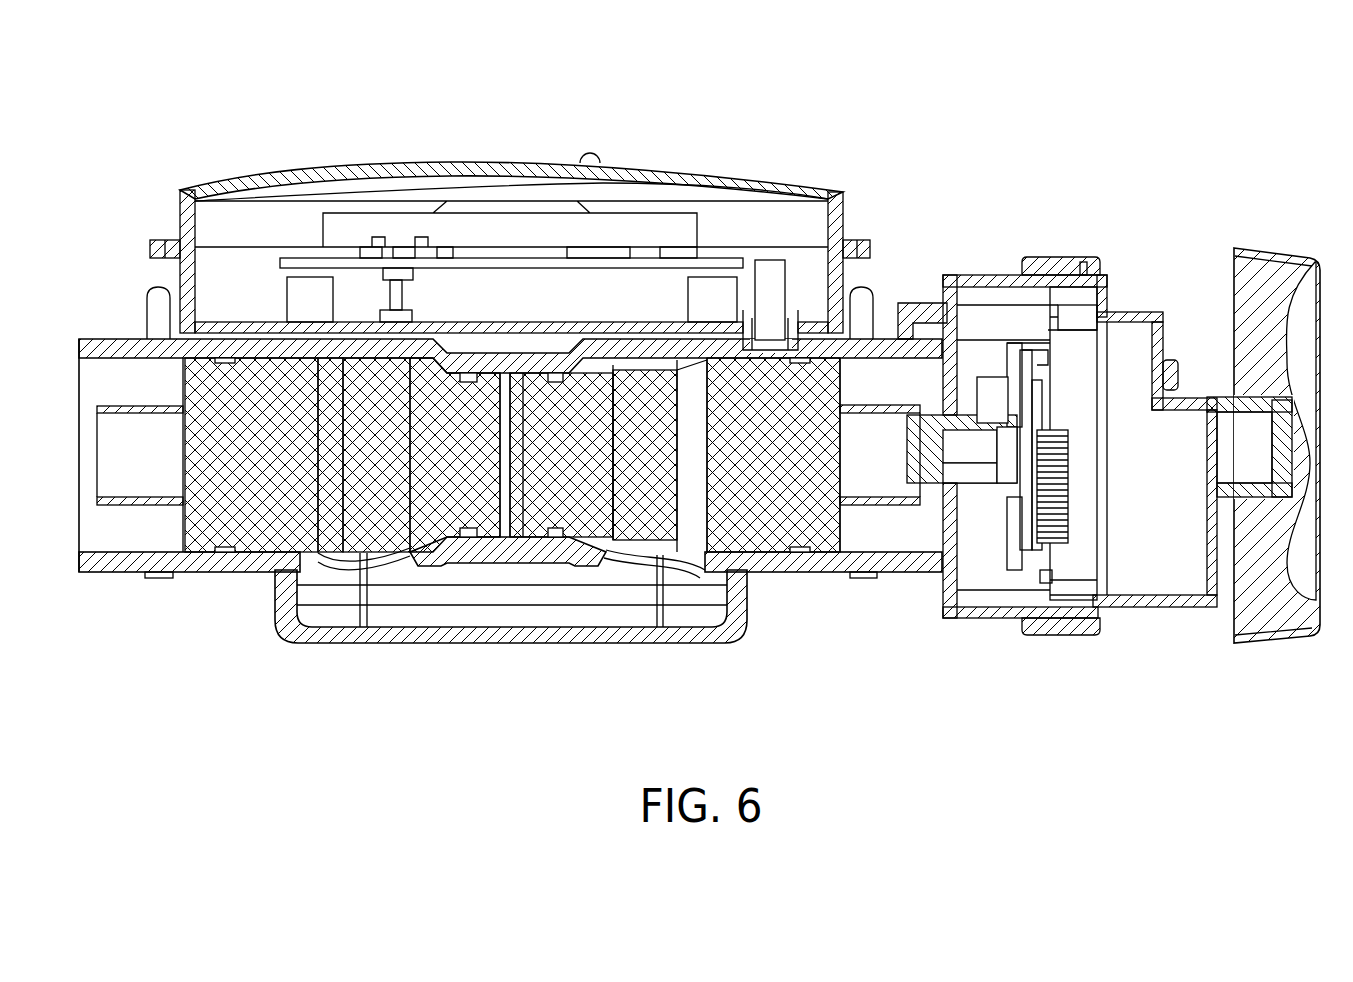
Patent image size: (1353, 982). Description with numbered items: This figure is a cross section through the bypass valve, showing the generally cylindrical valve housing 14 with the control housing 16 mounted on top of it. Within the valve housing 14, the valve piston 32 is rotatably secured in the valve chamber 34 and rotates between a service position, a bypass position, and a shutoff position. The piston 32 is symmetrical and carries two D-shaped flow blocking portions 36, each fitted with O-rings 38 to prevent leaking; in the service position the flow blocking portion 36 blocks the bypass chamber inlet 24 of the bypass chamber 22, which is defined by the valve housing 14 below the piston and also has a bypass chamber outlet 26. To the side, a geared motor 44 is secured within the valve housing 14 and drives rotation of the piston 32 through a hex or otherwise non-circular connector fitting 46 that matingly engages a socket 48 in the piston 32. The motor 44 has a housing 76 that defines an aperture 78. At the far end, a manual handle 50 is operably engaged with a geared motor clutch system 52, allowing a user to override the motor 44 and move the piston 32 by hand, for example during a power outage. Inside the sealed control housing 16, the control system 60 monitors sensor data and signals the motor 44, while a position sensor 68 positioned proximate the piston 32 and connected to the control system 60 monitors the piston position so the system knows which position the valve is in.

The valve housing 14 is at (878, 347).
The control housing 16 is at (192, 190).
The bypass chamber 22 is at (508, 593).
The bypass chamber inlet 24 is at (360, 555).
The bypass chamber outlet 26 is at (662, 555).
The valve piston 32 is at (740, 457).
The valve chamber 34 is at (857, 540).
The flow blocking portion 36 is at (257, 485).
The O-rings 38 is at (553, 378).
The motor 44 is at (1013, 268).
The connector fitting 46 is at (965, 470).
The socket 48 is at (933, 457).
The manual handle 50 is at (1234, 287).
The motor clutch system 52 is at (1057, 413).
The control system 60 is at (475, 257).
The position sensor 68 is at (768, 280).
The housing 76 is at (962, 275).
The aperture 78 is at (1037, 458).